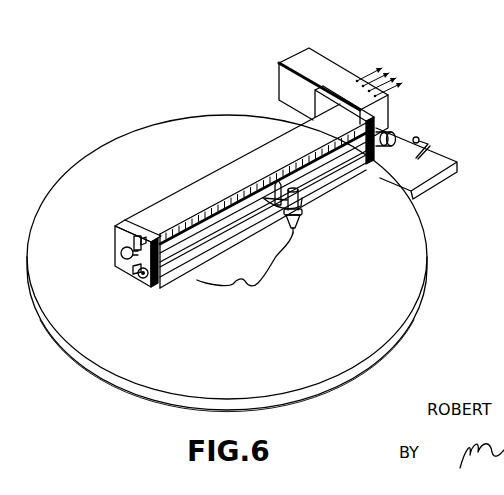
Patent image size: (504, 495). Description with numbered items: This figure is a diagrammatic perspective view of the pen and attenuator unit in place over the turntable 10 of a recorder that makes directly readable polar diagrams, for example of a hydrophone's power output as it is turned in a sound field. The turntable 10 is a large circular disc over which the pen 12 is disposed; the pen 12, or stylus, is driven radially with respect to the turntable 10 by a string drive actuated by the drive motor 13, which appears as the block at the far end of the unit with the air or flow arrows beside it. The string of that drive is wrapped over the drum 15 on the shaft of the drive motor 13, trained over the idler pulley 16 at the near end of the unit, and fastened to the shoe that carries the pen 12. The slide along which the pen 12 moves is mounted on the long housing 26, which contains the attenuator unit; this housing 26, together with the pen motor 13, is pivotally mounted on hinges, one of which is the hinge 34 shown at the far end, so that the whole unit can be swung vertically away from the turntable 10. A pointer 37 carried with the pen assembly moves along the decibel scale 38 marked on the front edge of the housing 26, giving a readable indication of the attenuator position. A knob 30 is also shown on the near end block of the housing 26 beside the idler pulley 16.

The turntable 10 is at (429, 258).
The pen 12 is at (300, 211).
The drive motor 13 is at (347, 70).
The drum 15 is at (395, 136).
The idler pulley 16 is at (141, 279).
The housing 26 is at (288, 146).
The clamp knob 30 is at (121, 253).
The hinge 34 is at (432, 144).
The pointer 37 is at (299, 189).
The decibel scale 38 is at (233, 203).